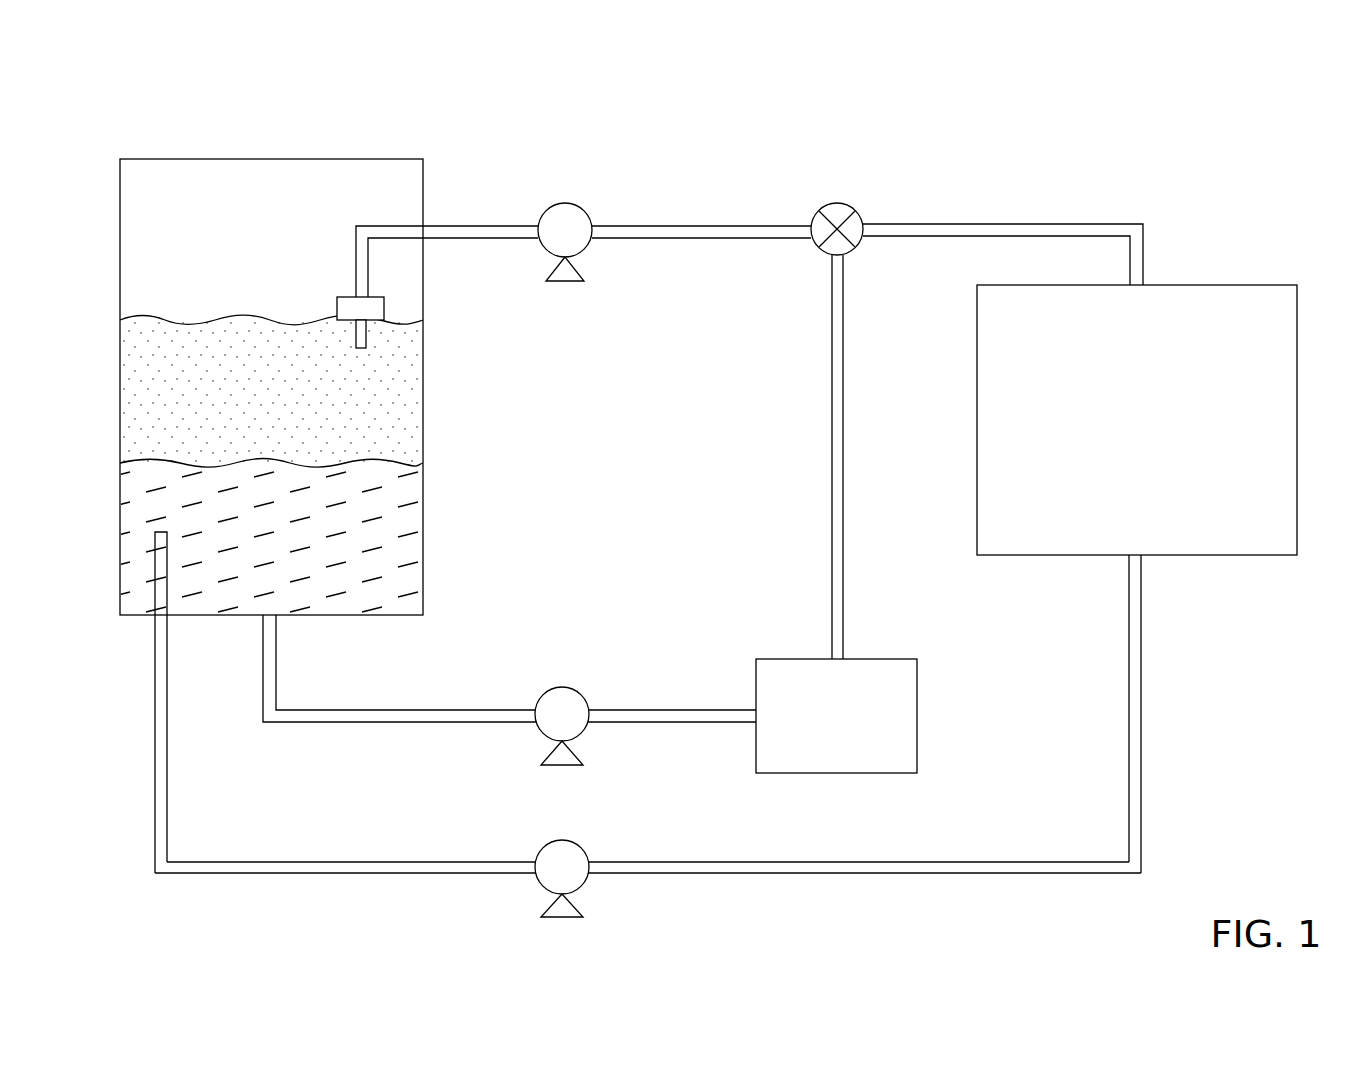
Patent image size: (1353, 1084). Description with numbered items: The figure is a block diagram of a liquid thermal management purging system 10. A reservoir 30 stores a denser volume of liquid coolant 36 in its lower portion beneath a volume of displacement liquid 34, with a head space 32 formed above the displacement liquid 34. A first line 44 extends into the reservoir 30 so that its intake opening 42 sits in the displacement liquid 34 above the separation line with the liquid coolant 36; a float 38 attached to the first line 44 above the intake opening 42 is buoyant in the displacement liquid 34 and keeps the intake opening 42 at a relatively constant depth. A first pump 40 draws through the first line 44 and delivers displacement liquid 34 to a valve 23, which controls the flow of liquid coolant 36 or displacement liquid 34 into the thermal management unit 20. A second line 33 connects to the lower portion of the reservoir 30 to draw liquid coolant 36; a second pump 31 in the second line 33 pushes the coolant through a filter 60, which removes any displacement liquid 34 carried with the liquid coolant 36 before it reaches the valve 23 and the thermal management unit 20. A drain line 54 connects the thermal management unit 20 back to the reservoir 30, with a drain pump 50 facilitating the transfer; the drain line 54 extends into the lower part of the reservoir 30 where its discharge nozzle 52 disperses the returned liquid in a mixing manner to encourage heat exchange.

The liquid thermal management purging system 10 is at (1206, 98).
The thermal management unit 20 is at (1162, 470).
The valve 23 is at (837, 203).
The reservoir 30 is at (423, 178).
The second pump 31 is at (578, 691).
The head space 32 is at (292, 247).
The second line 33 is at (375, 709).
The displacement liquid 34 is at (250, 405).
The liquid coolant 36 is at (248, 554).
The float 38 is at (384, 310).
The first pump 40 is at (583, 204).
The intake opening 42 is at (366, 340).
The first line 44 is at (448, 225).
The drain pump 50 is at (580, 887).
The discharge nozzle 52 is at (155, 590).
The drain line 54 is at (407, 873).
The filter 60 is at (858, 752).